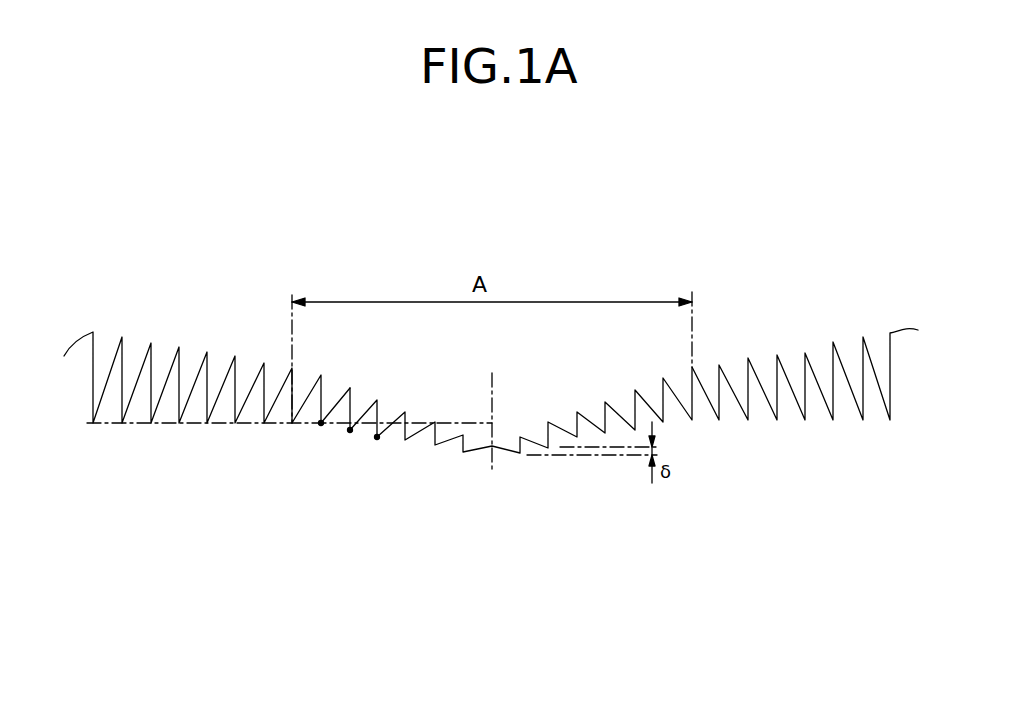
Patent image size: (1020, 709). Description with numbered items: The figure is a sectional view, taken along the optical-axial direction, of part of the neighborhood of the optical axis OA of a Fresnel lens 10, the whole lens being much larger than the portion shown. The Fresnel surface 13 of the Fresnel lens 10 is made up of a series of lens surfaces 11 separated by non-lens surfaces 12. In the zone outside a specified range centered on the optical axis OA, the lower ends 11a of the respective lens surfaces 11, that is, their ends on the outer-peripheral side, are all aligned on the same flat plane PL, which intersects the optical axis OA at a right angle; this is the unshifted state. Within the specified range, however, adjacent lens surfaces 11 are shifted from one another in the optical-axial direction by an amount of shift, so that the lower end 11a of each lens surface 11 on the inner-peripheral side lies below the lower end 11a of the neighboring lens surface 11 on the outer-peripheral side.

The Fresnel lens 10 is at (220, 215).
The lens surface 11 is at (378, 406).
The lower end of lens surface 11a is at (321, 423).
The non-lens surface 12 is at (380, 410).
The Fresnel surface 13 is at (729, 330).
The flat plane PL is at (194, 423).
The optical axis OA is at (492, 408).